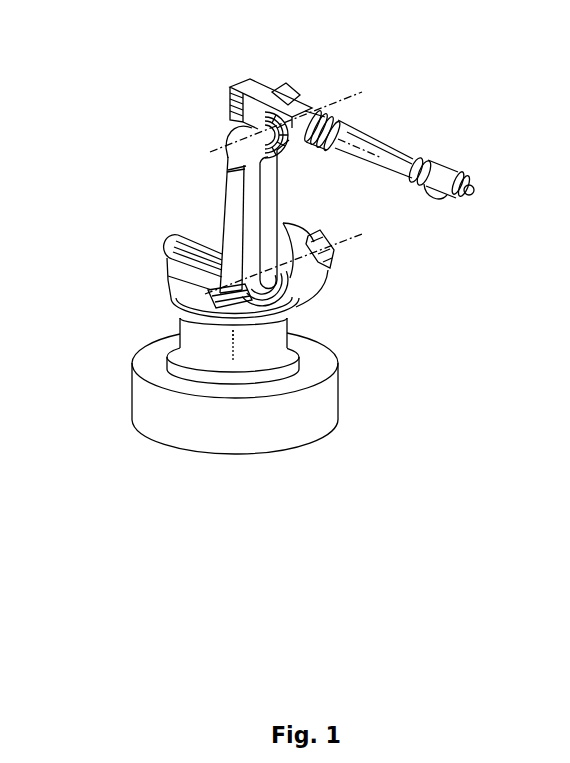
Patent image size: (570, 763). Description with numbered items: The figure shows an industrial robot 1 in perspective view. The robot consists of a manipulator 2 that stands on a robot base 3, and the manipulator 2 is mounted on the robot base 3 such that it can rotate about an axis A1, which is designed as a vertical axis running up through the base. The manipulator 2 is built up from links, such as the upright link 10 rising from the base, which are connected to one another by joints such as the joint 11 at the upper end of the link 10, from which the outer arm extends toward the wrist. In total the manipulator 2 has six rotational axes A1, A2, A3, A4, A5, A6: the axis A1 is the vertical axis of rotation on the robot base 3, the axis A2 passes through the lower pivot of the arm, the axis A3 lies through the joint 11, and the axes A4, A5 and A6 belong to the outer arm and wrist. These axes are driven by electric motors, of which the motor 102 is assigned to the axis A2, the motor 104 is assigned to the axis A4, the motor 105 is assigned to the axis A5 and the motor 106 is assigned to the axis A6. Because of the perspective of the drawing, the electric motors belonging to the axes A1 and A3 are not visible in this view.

The industrial robot 1 is at (97, 72).
The manipulator 2 is at (440, 300).
The robot base 3 is at (322, 400).
The link 10 is at (222, 218).
The joint 11 is at (287, 157).
The motor assigned to the axis A2 102 is at (336, 266).
The motor assigned to the axis A4 104 is at (246, 82).
The motor assigned to the axis A5 105 is at (230, 89).
The motor assigned to the axis A6 106 is at (230, 108).
The axis A1 is at (133, 392).
The axis A2 is at (347, 243).
The axis A3 is at (327, 105).
The axis A4 is at (345, 126).
The axis A5 is at (473, 177).
The axis A6 is at (478, 195).